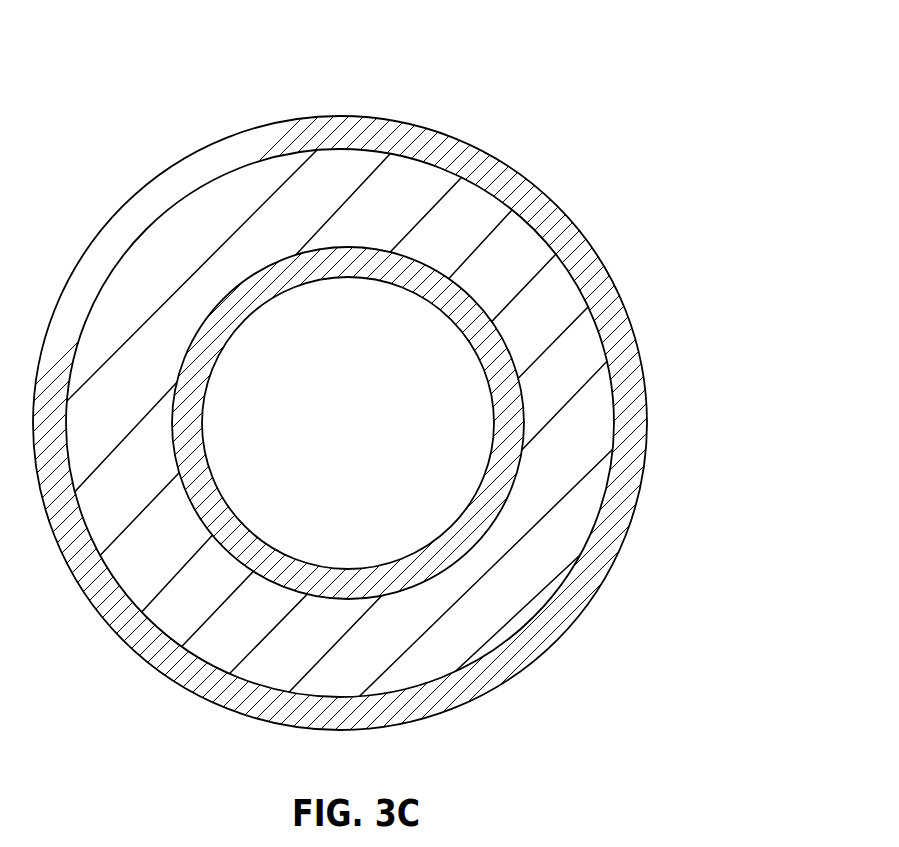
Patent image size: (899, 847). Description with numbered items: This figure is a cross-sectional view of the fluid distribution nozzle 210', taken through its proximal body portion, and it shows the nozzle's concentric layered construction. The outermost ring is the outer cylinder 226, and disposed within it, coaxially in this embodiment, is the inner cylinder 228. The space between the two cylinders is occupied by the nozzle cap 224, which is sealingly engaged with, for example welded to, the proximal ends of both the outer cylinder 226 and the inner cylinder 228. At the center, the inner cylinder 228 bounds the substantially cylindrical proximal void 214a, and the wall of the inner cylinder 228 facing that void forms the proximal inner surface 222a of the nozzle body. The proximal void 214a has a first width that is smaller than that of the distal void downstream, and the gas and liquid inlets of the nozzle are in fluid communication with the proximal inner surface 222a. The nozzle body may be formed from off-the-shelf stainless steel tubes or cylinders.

The nozzle 210' is at (449, 423).
The outer cylinder 226 is at (628, 490).
The nozzle cap 224 is at (530, 590).
The inner cylinder 228 is at (500, 405).
The proximal inner surface 222a is at (267, 541).
The proximal void 214a is at (365, 428).